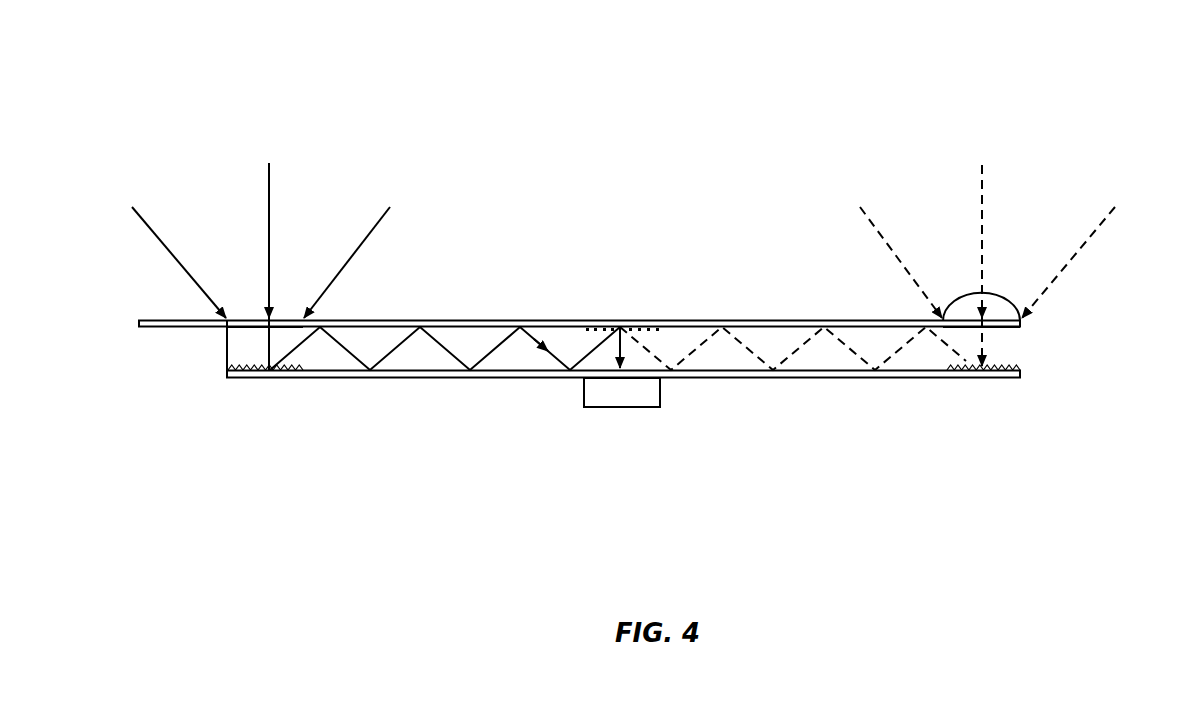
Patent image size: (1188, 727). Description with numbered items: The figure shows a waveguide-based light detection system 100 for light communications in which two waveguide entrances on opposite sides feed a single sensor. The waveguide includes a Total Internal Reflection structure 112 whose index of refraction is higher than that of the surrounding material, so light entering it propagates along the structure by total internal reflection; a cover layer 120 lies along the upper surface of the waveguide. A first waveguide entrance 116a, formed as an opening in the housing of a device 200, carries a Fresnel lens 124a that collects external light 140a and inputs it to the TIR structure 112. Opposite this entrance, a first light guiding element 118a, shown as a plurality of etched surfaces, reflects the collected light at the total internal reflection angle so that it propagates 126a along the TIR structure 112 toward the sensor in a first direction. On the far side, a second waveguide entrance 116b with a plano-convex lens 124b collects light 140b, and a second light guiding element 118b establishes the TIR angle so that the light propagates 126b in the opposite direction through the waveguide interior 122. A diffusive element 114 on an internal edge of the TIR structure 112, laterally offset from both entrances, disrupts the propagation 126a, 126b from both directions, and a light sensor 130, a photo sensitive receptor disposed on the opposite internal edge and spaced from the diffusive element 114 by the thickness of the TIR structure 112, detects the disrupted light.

The light detection system 100 is at (775, 82).
The light collected by first waveguide entrance 140a is at (345, 179).
The light collected by second waveguide entrance 140b is at (1050, 177).
The top cover plate 120 is at (813, 321).
The total internal reflection structure 112 is at (413, 358).
The first waveguide entrance 116a is at (256, 336).
The Fresnel lens 124a is at (236, 328).
The first light guiding element 118a is at (287, 371).
The first propagation of collected light 126a is at (443, 347).
The second propagation of collected light 126b is at (717, 342).
The waveguide interior 122 is at (735, 340).
The diffusive element 114 is at (618, 328).
The light sensor 130 is at (640, 399).
The plano-convex lens 124b is at (1021, 322).
The second waveguide entrance 116b is at (1009, 336).
The second light guiding element 118b is at (997, 372).
The device 200 is at (508, 487).